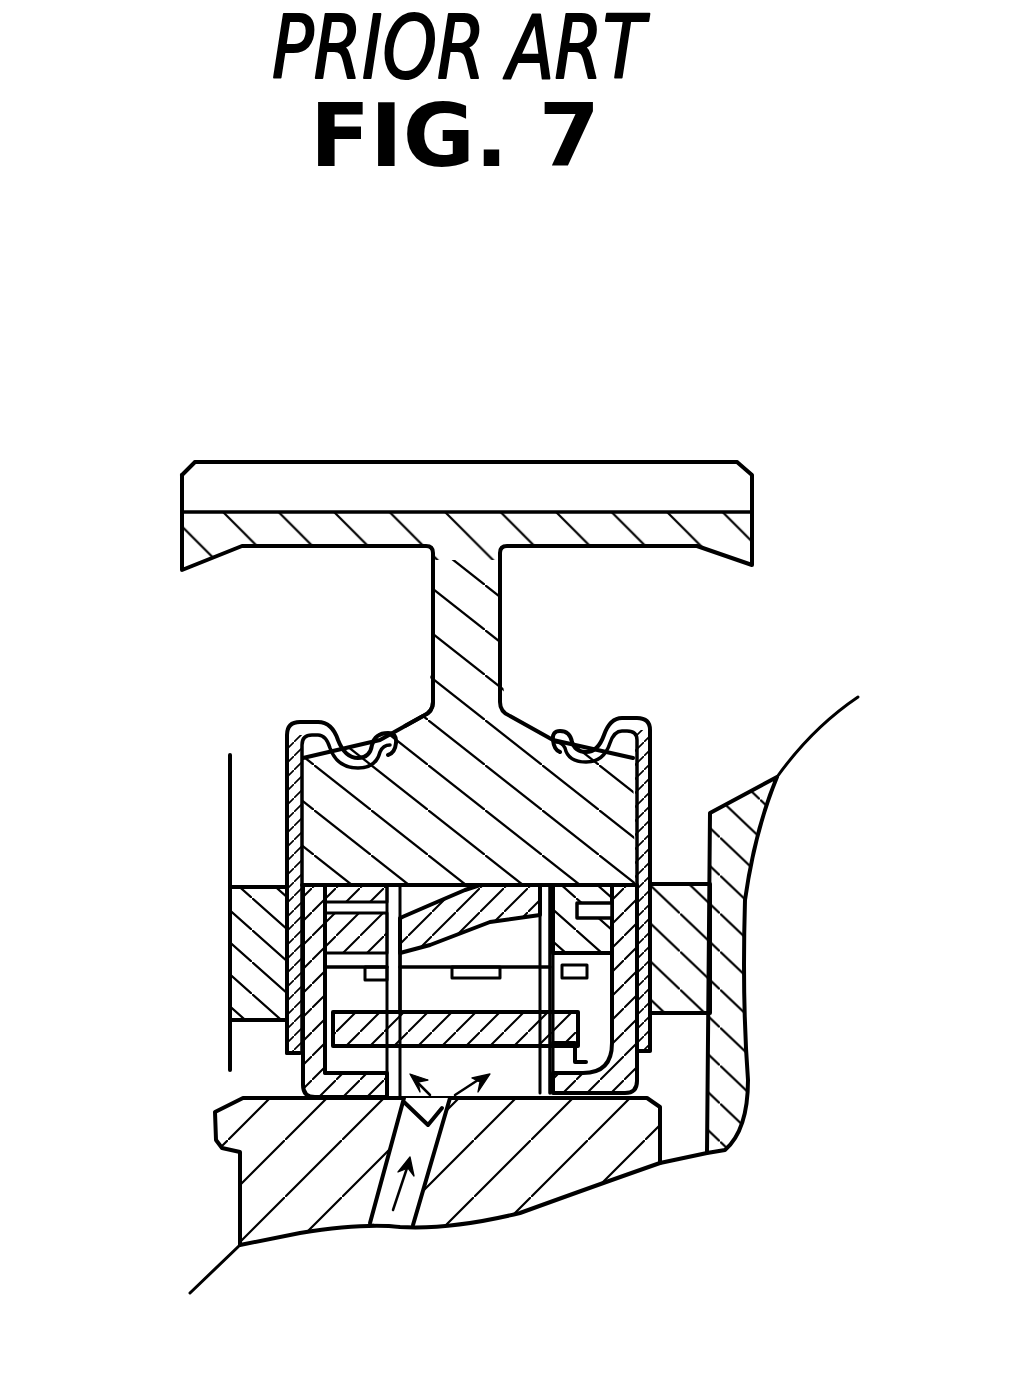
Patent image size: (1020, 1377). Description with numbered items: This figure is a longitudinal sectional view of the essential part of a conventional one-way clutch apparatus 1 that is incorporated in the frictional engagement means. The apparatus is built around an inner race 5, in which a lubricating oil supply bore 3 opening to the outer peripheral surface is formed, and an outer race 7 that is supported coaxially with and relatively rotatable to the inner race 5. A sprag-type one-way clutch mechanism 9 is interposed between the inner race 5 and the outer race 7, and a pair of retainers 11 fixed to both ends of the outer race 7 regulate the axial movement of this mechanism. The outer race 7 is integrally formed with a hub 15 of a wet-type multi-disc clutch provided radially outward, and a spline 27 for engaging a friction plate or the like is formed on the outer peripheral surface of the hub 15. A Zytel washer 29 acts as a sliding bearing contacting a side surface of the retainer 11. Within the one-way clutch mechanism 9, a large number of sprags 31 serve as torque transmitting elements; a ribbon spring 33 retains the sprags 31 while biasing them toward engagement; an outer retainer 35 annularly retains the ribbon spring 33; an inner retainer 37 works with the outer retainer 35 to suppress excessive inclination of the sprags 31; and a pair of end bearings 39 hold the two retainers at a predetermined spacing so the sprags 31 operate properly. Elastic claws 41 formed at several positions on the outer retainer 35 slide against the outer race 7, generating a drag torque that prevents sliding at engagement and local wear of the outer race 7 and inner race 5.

The one-way clutch apparatus 1 is at (205, 620).
The lubricating oil supply bore 3 is at (410, 1161).
The inner race 5 is at (380, 1225).
The outer race 7 is at (488, 878).
The one-way clutch mechanism 9 is at (660, 1033).
The retainers 11 is at (290, 740).
The hub 15 is at (585, 464).
The spline 27 is at (715, 478).
The Zytel washer 29 is at (255, 905).
The sprags 31 is at (517, 1075).
The ribbon spring 33 is at (590, 985).
The outer retainer 35 is at (545, 912).
The inner retainer 37 is at (600, 1070).
The end bearings 39 is at (290, 1068).
The elastic claws 41 is at (412, 722).